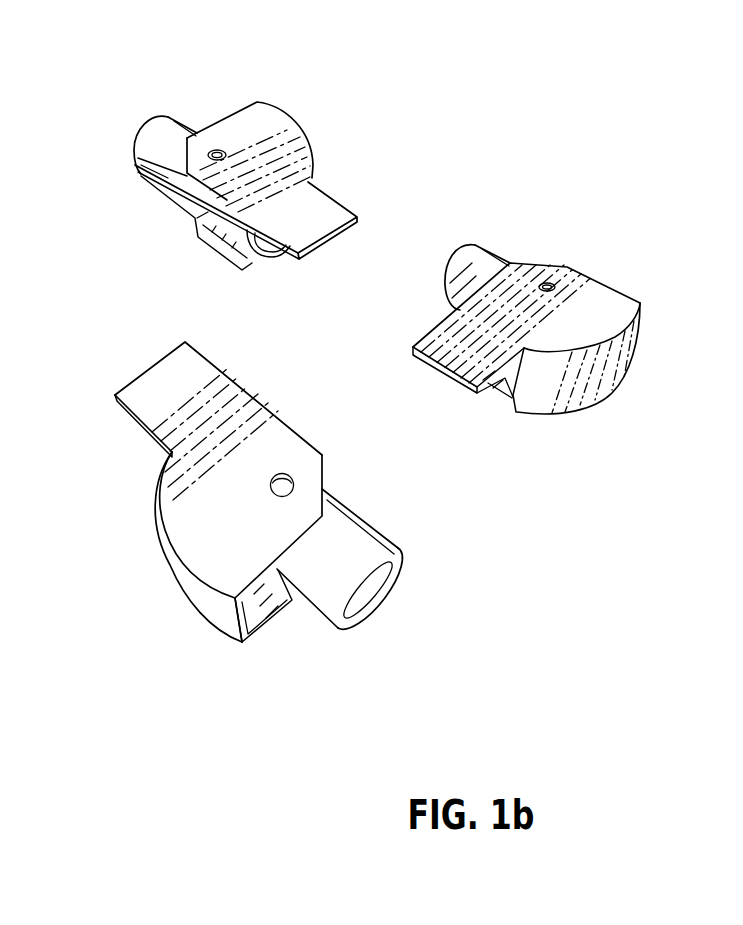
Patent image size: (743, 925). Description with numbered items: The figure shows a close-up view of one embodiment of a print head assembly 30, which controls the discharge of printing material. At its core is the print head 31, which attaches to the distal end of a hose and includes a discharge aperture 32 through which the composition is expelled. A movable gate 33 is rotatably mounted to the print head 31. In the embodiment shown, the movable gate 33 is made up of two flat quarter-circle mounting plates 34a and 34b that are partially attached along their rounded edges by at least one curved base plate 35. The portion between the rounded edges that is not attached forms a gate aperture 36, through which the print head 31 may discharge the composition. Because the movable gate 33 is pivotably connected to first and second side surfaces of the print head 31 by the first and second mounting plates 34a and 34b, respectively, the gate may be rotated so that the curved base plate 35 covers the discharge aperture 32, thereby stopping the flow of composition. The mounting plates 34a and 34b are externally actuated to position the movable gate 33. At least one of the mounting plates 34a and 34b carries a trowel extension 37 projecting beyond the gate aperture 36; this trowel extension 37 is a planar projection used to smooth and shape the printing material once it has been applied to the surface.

The print head assembly 30 is at (602, 422).
The print head 31 is at (162, 122).
The discharge aperture 32 is at (380, 605).
The movable gate 33 is at (285, 112).
The mounting plate 34a is at (287, 427).
The mounting plate 34b is at (263, 630).
The base plate 35 is at (232, 605).
The gate aperture 36 is at (510, 410).
The trowel extension 37 is at (317, 207).